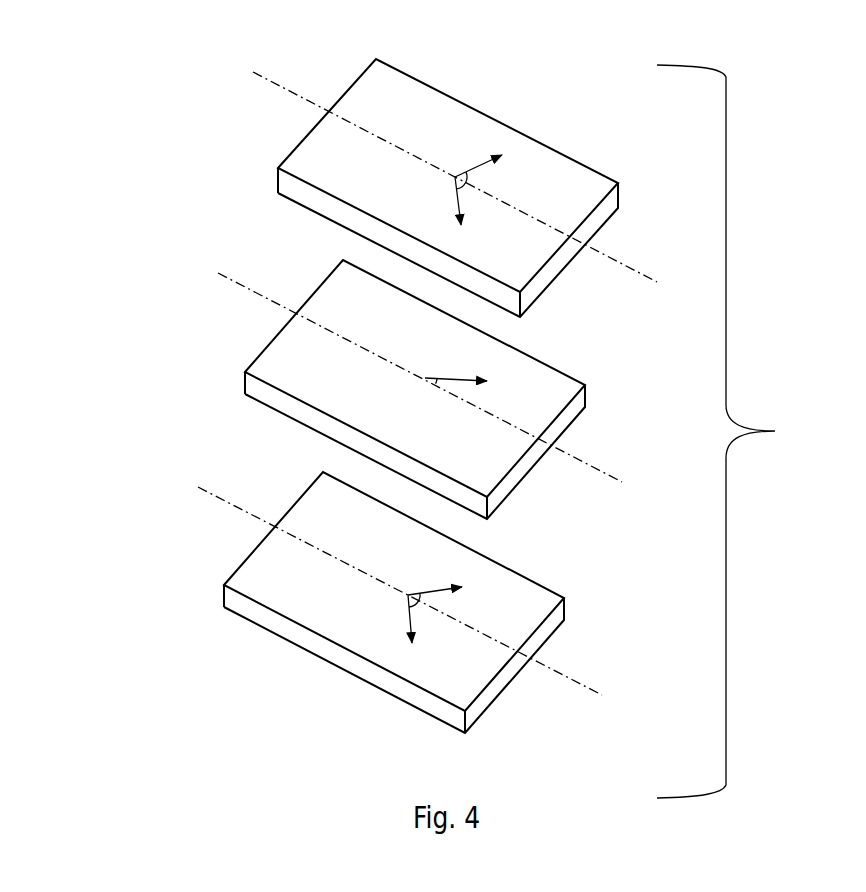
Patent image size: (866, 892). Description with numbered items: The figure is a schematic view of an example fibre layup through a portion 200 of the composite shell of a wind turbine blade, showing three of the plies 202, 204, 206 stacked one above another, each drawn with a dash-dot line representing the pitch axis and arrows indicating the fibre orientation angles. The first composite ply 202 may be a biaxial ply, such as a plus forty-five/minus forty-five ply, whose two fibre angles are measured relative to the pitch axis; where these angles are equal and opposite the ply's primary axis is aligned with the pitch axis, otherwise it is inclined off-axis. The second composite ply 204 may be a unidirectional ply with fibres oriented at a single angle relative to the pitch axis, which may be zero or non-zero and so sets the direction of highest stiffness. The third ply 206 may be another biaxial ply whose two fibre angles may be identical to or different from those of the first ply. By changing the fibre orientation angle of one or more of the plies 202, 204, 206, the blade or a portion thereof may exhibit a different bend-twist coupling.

The portion of the composite shell 200 is at (775, 431).
The first composite ply 202 is at (268, 157).
The second composite ply 204 is at (272, 330).
The third ply 206 is at (247, 552).